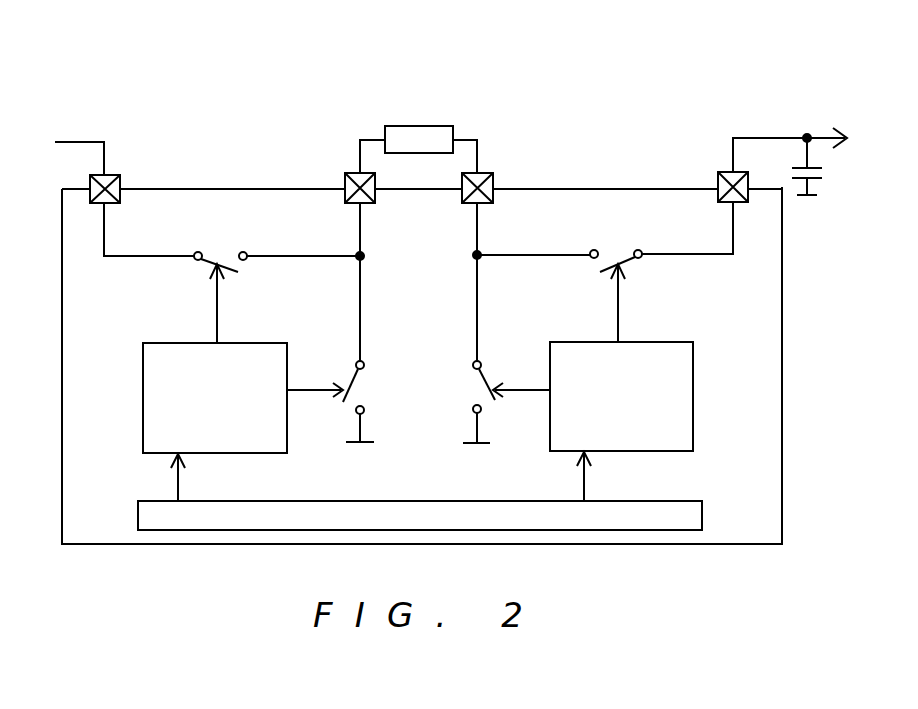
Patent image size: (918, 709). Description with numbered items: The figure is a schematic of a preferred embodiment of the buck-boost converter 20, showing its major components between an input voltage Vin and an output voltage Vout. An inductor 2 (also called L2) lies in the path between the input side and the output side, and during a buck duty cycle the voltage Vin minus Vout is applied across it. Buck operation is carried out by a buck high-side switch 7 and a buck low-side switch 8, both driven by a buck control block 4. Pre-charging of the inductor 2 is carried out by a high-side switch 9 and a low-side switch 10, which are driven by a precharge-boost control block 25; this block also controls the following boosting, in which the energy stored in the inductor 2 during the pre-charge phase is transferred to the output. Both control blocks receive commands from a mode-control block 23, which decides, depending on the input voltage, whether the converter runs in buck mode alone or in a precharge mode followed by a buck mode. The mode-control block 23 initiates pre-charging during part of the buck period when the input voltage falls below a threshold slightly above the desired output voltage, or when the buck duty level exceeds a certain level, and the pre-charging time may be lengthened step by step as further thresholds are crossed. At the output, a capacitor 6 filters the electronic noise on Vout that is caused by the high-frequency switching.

The inductor 2 is at (403, 126).
The buck control block 4 is at (143, 434).
The capacitor 6 is at (828, 171).
The buck high-side switch 7 is at (203, 273).
The buck low-side switch 8 is at (352, 371).
The high-side switch 9 is at (591, 266).
The low-side switch 10 is at (489, 411).
The converter circuit 20 is at (494, 85).
The mode-control block 23 is at (702, 512).
The precharge-boost control block 25 is at (693, 432).